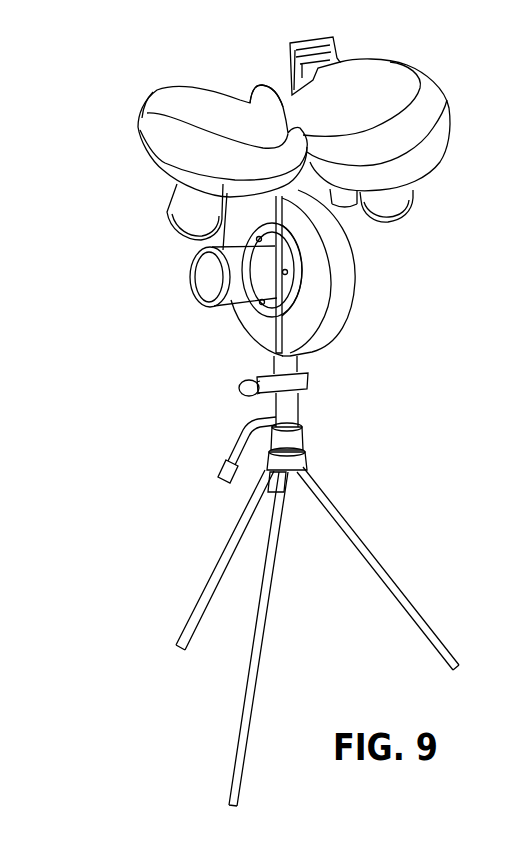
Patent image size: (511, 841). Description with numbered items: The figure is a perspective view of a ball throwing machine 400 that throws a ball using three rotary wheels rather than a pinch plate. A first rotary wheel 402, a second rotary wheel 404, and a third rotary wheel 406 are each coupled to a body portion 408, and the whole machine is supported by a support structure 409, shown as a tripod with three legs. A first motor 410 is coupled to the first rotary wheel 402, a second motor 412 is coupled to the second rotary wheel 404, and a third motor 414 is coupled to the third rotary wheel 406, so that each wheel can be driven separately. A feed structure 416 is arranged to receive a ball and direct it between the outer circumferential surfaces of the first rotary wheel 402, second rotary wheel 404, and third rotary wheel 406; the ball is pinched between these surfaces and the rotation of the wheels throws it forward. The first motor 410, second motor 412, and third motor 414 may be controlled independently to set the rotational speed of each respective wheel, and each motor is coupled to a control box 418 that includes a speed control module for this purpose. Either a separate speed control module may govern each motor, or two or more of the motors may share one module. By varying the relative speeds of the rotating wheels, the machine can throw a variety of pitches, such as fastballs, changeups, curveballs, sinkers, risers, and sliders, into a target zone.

The ball throwing machine 400 is at (99, 137).
The first rotary wheel 402 is at (337, 288).
The second rotary wheel 404 is at (428, 177).
The third rotary wheel 406 is at (140, 159).
The body portion 408 is at (262, 214).
The support structure 409 is at (367, 537).
The first motor 410 is at (247, 275).
The second motor 412 is at (392, 212).
The third motor 414 is at (167, 193).
The feed structure 416 is at (242, 96).
The control box 418 is at (292, 68).